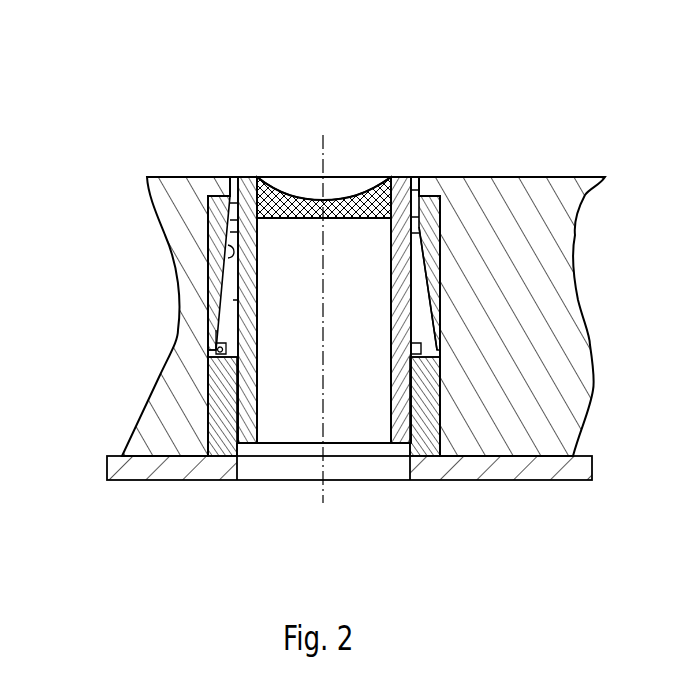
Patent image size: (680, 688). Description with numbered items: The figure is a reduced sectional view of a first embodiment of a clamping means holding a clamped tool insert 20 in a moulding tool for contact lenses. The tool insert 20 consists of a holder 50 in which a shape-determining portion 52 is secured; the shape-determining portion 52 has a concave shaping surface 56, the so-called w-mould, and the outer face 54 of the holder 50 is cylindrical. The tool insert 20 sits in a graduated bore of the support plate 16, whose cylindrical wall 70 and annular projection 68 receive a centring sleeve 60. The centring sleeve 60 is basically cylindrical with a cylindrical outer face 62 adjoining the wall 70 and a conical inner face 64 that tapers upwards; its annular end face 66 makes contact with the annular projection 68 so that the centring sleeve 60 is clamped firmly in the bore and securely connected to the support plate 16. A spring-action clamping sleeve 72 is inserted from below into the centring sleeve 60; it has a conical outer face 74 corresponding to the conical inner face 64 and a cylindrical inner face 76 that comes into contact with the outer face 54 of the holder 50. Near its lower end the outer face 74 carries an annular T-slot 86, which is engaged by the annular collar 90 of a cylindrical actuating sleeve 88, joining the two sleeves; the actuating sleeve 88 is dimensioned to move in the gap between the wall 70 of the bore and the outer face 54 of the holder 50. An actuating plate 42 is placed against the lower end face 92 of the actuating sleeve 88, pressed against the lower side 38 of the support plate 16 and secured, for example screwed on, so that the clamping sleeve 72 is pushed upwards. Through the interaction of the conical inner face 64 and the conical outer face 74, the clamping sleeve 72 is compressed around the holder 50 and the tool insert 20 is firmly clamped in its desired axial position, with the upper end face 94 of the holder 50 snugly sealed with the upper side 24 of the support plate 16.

The support plate 16 is at (533, 197).
The tool insert 20 is at (290, 245).
The upper side of the support plate 24 is at (577, 177).
The lower side of the support plate 38 is at (467, 458).
The actuating plate 42 is at (523, 470).
The holder 50 is at (402, 180).
The shape-determining portion 52 is at (363, 197).
The outer face of the holder 54 is at (411, 248).
The concave shaping surface 56 is at (338, 196).
The centring sleeve 60 is at (440, 196).
The cylindrical outer face of the centring sleeve 62 is at (208, 196).
The conical inner face of the centring sleeve 64 is at (229, 255).
The annular end face of the centring sleeve 66 is at (233, 196).
The annular projection 68 is at (223, 197).
The cylindrical wall of the bore 70 is at (443, 262).
The clamping sleeve 72 is at (440, 297).
The conical outer face of the clamping sleeve 74 is at (418, 307).
The cylindrical inner face of the clamping sleeve 76 is at (232, 305).
The annular T-slot 86 is at (216, 348).
The actuating sleeve 88 is at (208, 390).
The annular collar 90 is at (210, 352).
The lower end face of the actuating sleeve 92 is at (222, 458).
The upper end face of the holder 94 is at (254, 178).